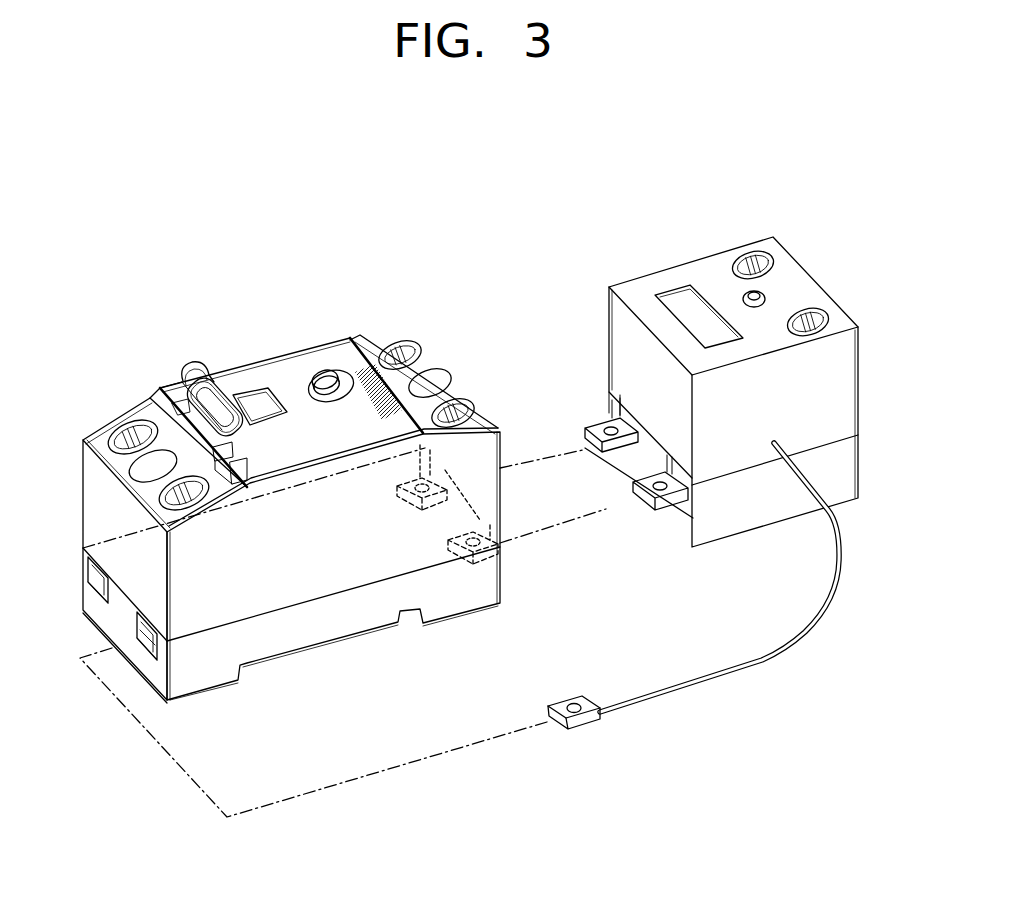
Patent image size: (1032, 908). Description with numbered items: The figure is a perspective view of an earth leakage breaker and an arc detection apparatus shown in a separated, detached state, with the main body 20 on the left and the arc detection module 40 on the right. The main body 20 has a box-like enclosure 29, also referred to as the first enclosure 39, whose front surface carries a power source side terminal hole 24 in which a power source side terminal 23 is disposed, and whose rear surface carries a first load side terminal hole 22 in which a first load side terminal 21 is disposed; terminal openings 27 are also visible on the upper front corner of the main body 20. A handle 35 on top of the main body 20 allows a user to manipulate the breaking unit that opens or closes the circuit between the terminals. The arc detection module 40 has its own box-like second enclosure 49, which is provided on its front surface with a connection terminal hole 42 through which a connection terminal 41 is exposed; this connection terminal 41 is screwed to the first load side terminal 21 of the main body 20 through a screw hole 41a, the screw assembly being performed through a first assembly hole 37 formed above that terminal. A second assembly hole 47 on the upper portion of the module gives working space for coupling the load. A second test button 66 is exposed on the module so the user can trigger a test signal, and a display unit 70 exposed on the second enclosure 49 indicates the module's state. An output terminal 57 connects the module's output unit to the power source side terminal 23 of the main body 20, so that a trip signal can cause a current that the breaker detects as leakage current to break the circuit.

The main body 20 is at (403, 633).
The first load side terminal 21 is at (480, 568).
The first load side terminal hole 22 is at (500, 545).
The power source side terminal 23 is at (143, 643).
The power source side terminal hole 24 is at (140, 624).
The power-side terminal holes 27 is at (130, 425).
The enclosure 29 is at (315, 582).
The handle 35 is at (192, 372).
The first assembly hole 37 is at (410, 347).
The first enclosure 39 is at (318, 352).
The arc detection module 40 is at (617, 270).
The connection terminal 41 is at (590, 430).
The screw hole 41a is at (594, 418).
The connection terminal hole 42 is at (612, 405).
The second assembly hole 47 is at (812, 325).
The second enclosure 49 is at (848, 385).
The output terminal 57 is at (578, 730).
The second test button 66 is at (762, 297).
The display unit 70 is at (676, 298).